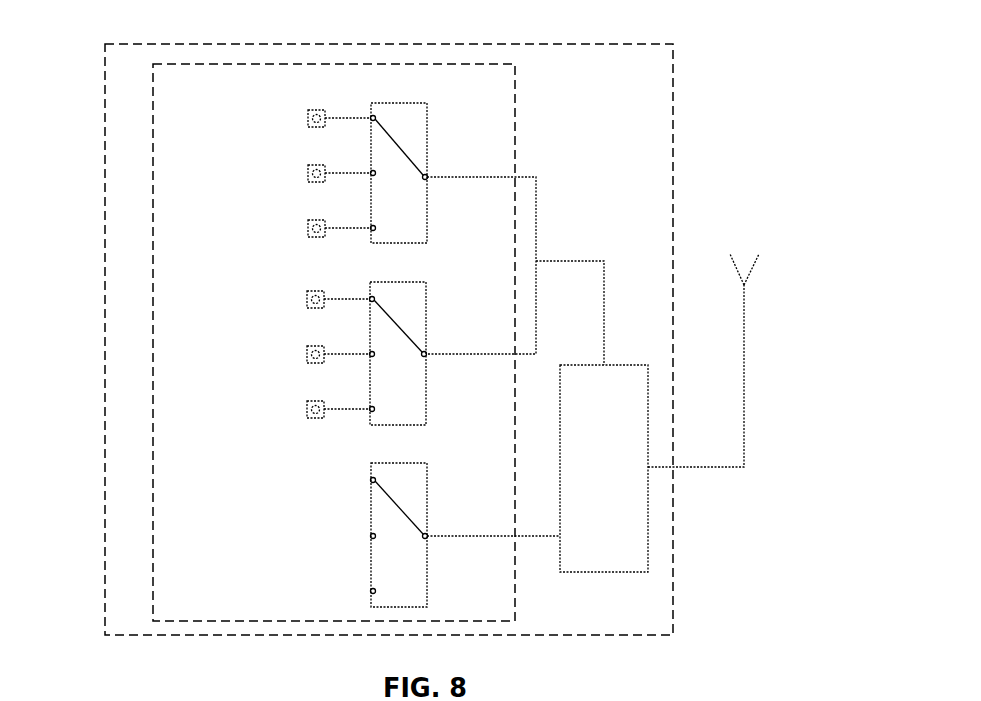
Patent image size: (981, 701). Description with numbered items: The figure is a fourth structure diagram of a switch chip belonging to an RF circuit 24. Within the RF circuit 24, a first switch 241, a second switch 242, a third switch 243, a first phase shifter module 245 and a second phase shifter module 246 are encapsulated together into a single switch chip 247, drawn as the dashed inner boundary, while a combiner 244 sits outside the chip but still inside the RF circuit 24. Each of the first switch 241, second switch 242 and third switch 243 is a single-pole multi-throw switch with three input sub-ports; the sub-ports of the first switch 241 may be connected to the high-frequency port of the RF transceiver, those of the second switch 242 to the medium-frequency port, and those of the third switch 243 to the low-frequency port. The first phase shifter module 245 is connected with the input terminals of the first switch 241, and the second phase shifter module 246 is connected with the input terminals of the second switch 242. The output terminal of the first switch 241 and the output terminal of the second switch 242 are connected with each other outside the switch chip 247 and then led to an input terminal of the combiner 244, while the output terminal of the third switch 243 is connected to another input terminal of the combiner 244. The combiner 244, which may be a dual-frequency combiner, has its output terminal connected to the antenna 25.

The RF circuit 24 is at (105, 316).
The antenna 25 is at (737, 250).
The first switch 241 is at (427, 133).
The second switch 242 is at (426, 313).
The third switch 243 is at (427, 493).
The combiner 244 is at (560, 517).
The first phase shifter module 245 is at (274, 162).
The second phase shifter module 246 is at (277, 336).
The switch chip 247 is at (515, 621).